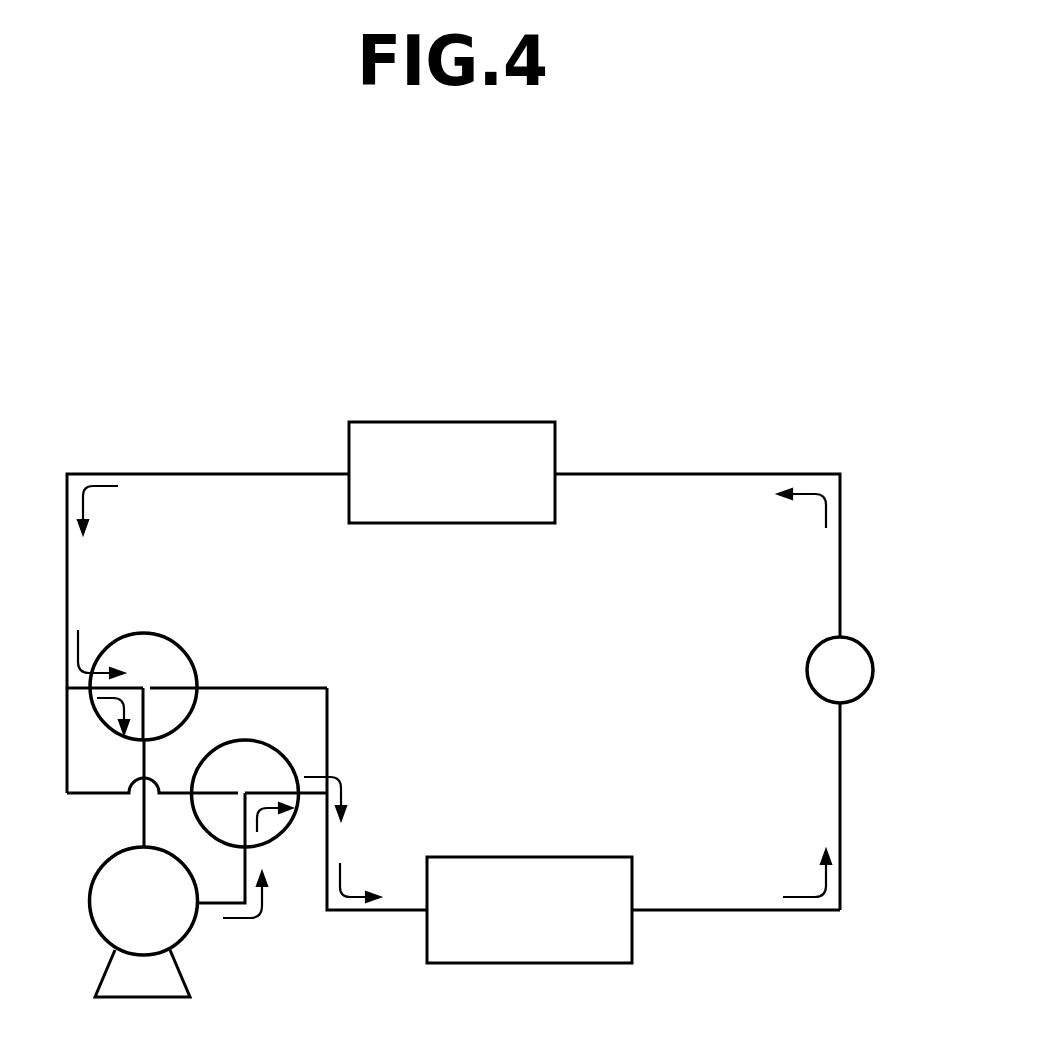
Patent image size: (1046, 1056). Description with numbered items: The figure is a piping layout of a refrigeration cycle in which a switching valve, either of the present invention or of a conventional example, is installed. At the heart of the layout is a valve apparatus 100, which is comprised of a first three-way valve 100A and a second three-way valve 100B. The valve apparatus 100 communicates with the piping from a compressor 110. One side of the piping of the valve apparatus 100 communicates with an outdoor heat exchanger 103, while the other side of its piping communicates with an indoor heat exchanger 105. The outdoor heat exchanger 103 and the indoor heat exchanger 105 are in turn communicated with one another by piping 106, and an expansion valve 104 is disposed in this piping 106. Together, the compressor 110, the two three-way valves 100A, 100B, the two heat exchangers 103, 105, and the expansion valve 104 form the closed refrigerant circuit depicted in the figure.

The valve apparatus 100 is at (328, 733).
The first three-way valve 100A is at (287, 830).
The second three-way valve 100B is at (183, 643).
The outdoor heat exchanger 103 is at (520, 857).
The expansion valve 104 is at (807, 670).
The indoor heat exchanger 105 is at (447, 422).
The piping 106 is at (747, 911).
The compressor 110 is at (193, 925).